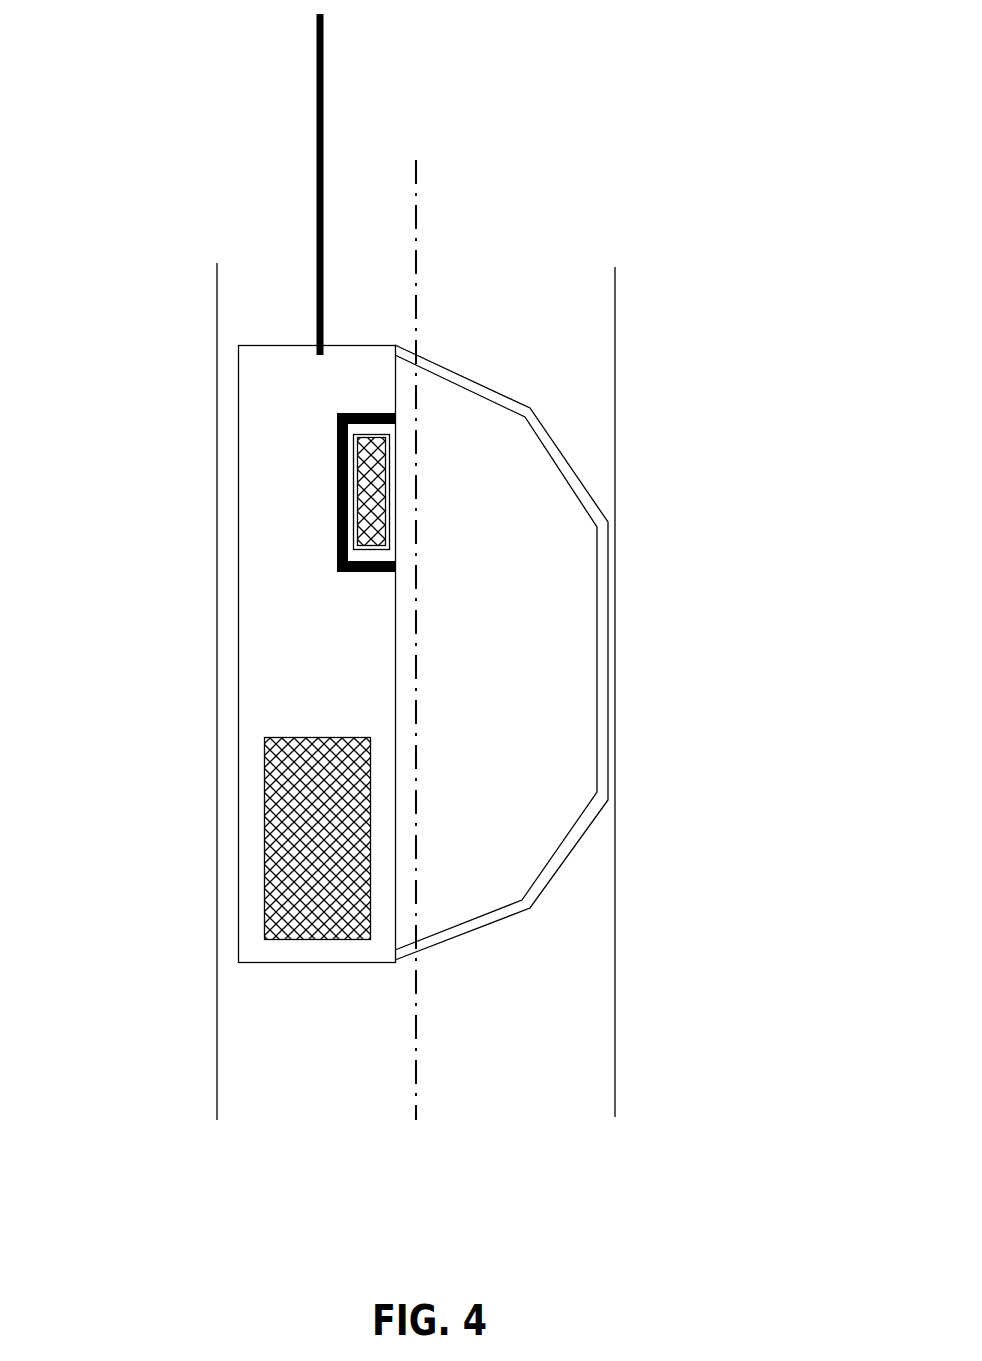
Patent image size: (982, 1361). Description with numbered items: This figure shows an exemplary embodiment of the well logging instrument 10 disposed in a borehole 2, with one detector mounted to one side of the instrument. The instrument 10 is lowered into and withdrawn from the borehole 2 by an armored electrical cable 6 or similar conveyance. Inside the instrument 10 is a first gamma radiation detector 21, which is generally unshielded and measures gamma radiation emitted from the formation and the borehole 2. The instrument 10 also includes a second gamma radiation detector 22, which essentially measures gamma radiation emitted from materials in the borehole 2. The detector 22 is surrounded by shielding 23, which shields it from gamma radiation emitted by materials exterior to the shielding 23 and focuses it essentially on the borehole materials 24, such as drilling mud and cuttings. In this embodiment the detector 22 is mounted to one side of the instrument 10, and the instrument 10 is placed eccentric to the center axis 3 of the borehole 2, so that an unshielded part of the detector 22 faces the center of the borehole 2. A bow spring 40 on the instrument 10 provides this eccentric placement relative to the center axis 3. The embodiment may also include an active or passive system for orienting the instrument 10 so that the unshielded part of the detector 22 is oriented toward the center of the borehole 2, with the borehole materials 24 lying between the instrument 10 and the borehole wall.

The borehole 2 is at (615, 302).
The center axis 3 is at (423, 1103).
The armored electrical cable 6 is at (323, 86).
The well logging instrument 10 is at (292, 338).
The first gamma radiation detector 21 is at (272, 824).
The second gamma radiation detector 22 is at (385, 485).
The shielding 23 is at (337, 495).
The borehole materials 24 is at (562, 378).
The bow spring 40 is at (572, 850).